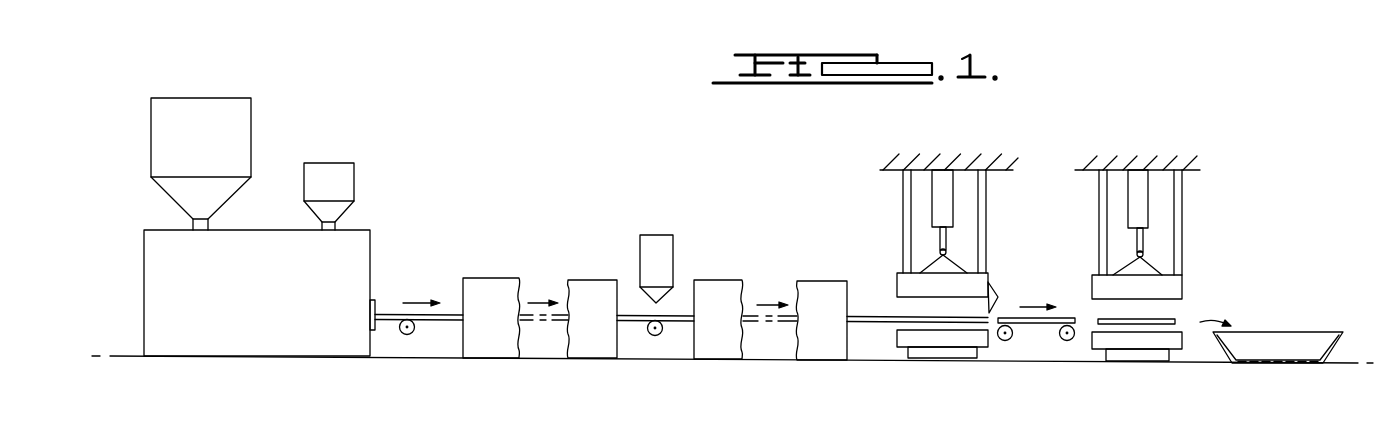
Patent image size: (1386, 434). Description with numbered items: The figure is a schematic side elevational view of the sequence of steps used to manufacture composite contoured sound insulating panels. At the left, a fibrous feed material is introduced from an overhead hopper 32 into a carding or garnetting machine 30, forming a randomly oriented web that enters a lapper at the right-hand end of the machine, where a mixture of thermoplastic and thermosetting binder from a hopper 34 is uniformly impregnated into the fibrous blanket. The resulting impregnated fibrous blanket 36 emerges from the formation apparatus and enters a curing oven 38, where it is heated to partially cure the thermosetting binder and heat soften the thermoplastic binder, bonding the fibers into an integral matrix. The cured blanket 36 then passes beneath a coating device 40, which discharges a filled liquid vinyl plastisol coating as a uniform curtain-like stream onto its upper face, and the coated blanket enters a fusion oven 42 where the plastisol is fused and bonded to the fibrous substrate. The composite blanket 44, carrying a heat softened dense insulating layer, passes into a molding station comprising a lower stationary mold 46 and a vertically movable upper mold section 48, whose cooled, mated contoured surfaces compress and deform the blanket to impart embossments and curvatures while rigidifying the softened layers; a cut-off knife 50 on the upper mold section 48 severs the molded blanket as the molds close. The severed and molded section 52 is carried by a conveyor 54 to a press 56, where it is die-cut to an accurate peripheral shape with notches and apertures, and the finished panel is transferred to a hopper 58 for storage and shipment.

The carding or garnetting machine 30 is at (141, 290).
The overhead hopper 32 is at (240, 113).
The hopper 34 is at (347, 178).
The impregnated fibrous blanket 36 is at (388, 311).
The curing oven 38 is at (488, 278).
The coating device 40 is at (668, 246).
The fusion oven 42 is at (727, 280).
The composite blanket 44 is at (858, 318).
The lower stationary mold 46 is at (898, 342).
The upper mold section 48 is at (988, 282).
The cut-off knife 50 is at (1000, 297).
The severed and molded section 52 is at (1062, 318).
The conveyor 54 is at (1060, 337).
The press 56 is at (1183, 290).
The hopper 58 is at (1335, 348).